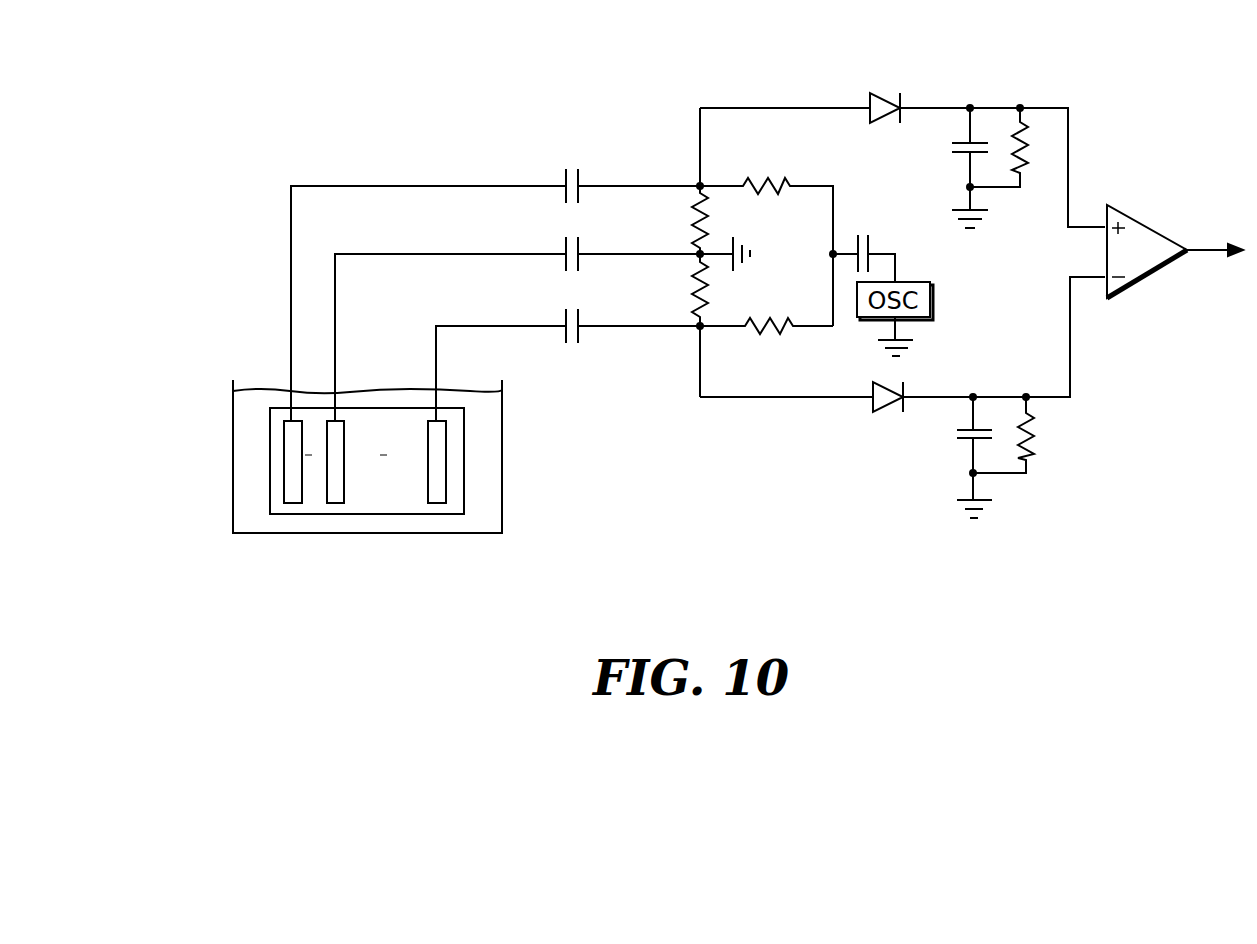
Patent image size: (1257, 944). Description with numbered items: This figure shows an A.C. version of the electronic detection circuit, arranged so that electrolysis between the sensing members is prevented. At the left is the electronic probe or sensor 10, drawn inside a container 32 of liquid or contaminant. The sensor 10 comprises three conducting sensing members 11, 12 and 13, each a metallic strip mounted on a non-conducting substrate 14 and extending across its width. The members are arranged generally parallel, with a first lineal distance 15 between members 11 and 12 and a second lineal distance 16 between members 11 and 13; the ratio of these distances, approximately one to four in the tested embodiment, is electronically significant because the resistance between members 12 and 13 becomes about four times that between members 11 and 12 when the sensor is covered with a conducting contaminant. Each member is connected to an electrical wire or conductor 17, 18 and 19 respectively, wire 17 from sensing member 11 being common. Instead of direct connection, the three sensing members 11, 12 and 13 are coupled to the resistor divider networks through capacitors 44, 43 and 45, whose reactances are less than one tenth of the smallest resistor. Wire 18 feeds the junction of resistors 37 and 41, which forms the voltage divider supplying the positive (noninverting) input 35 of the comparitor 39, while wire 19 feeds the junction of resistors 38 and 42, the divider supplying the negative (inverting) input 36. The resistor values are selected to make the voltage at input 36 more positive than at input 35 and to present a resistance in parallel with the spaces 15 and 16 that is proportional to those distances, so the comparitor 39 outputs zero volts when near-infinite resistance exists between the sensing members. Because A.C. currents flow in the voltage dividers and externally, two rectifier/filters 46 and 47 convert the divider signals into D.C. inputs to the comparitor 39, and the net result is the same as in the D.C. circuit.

The electronic probe or sensor 10 is at (361, 493).
The conducting sensing member 11 is at (337, 493).
The conducting sensing member 12 is at (293, 493).
The conducting sensing member 13 is at (437, 493).
The non-conducting substrate 14 is at (390, 517).
The first lineal distance 15 is at (313, 462).
The second lineal distance 16 is at (382, 460).
The electrical wire or conductor 17 is at (473, 253).
The electrical wire or conductor 18 is at (472, 185).
The electrical wire or conductor 19 is at (473, 325).
The container of liquid 32 is at (243, 405).
The positive (noninverting) input 35 is at (1100, 225).
The negative (inverting) input 36 is at (1100, 280).
The resistor 37 is at (690, 214).
The resistor 38 is at (690, 287).
The comparitor 39 is at (1167, 255).
The resistor 41 is at (772, 174).
The resistor 42 is at (780, 335).
The capacitor 43 is at (562, 185).
The capacitor 44 is at (562, 253).
The capacitor 45 is at (562, 325).
The rectifier/filter 46 is at (942, 94).
The rectifier/filter 47 is at (924, 424).